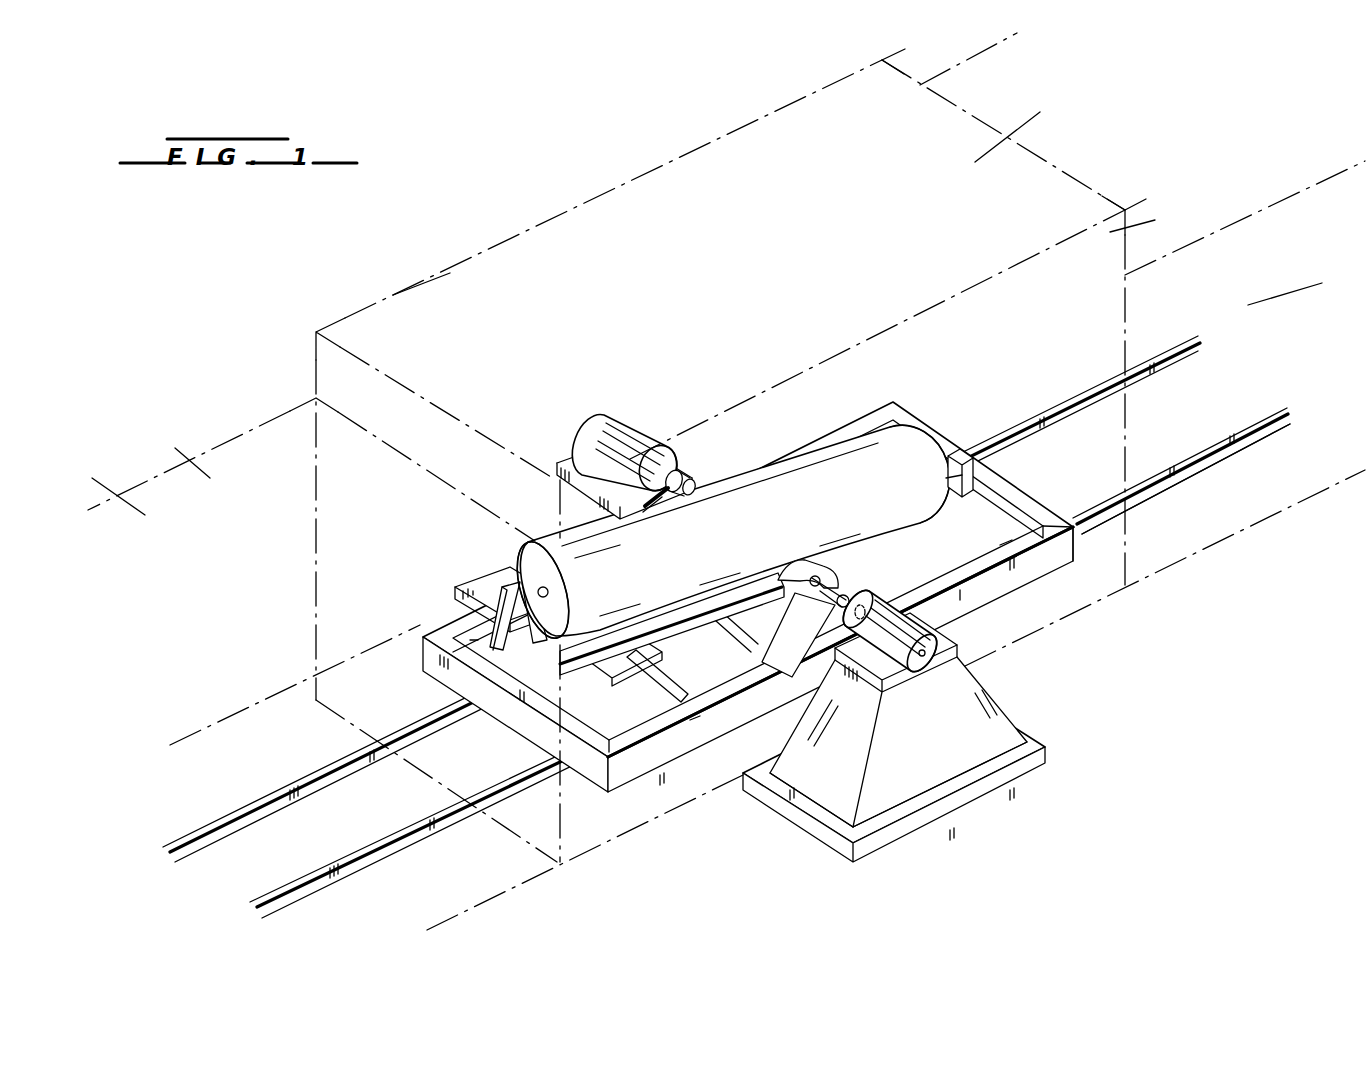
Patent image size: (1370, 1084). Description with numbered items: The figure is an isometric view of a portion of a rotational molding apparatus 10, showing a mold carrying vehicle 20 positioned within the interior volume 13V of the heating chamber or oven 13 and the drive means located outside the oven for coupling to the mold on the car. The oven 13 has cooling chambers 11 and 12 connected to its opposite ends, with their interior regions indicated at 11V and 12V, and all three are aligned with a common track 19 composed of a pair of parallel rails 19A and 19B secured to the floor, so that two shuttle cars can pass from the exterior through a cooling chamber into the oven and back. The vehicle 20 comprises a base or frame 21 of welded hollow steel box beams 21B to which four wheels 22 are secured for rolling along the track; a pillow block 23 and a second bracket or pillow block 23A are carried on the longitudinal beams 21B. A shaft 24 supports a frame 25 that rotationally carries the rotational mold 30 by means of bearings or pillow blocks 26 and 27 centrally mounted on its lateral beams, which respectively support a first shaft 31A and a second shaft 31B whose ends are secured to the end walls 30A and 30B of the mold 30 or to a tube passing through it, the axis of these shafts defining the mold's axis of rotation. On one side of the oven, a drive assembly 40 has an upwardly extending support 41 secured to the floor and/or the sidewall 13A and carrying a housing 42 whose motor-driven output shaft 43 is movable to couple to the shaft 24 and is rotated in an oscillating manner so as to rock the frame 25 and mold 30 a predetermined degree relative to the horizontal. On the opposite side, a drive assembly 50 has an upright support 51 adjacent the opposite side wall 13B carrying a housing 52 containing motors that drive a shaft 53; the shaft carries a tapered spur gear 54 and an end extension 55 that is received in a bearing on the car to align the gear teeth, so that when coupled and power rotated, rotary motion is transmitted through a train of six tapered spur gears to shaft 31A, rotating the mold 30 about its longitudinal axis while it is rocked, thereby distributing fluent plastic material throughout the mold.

The rotational molding apparatus 10 is at (1127, 660).
The cooling chamber 11 is at (1312, 483).
The view indicator 11V is at (1285, 291).
The cooling chamber 12 is at (311, 571).
The view indicator 12V is at (106, 481).
The heating chamber 13 is at (1078, 200).
The sidewall 13A is at (1237, 218).
The opposite side wall 13B is at (433, 277).
The oven interior volume 13V is at (1033, 129).
The track 19 is at (1262, 415).
The rail 19A is at (1268, 427).
The rail 19B is at (1052, 402).
The mold carrying vehicle 20 is at (638, 792).
The frame 21 is at (690, 745).
The hollow box beams 21B is at (990, 597).
The wheels 22 is at (680, 700).
The drive link 23 is at (700, 480).
The second bracket or pillow block 23A is at (800, 647).
The shaft 24 is at (805, 591).
The frame 25 is at (460, 597).
The bearing or pillow block 26 is at (527, 600).
The bearing or pillow block 27 is at (953, 452).
The rotational mold 30 is at (770, 531).
The end wall 30A is at (912, 428).
The end wall 30B is at (540, 582).
The first shaft 31A is at (548, 592).
The second shaft 31B is at (975, 470).
The drive assembly 40 is at (988, 689).
The upwardly extending support 41 is at (998, 706).
The housing 42 is at (923, 668).
The output shaft 43 is at (853, 597).
The drive assembly 50 is at (613, 406).
The upright support 51 is at (552, 517).
The housing 52 is at (640, 428).
The shaft 53 is at (684, 458).
The tapered spur gear 54 is at (700, 468).
The end extension 55 is at (710, 472).